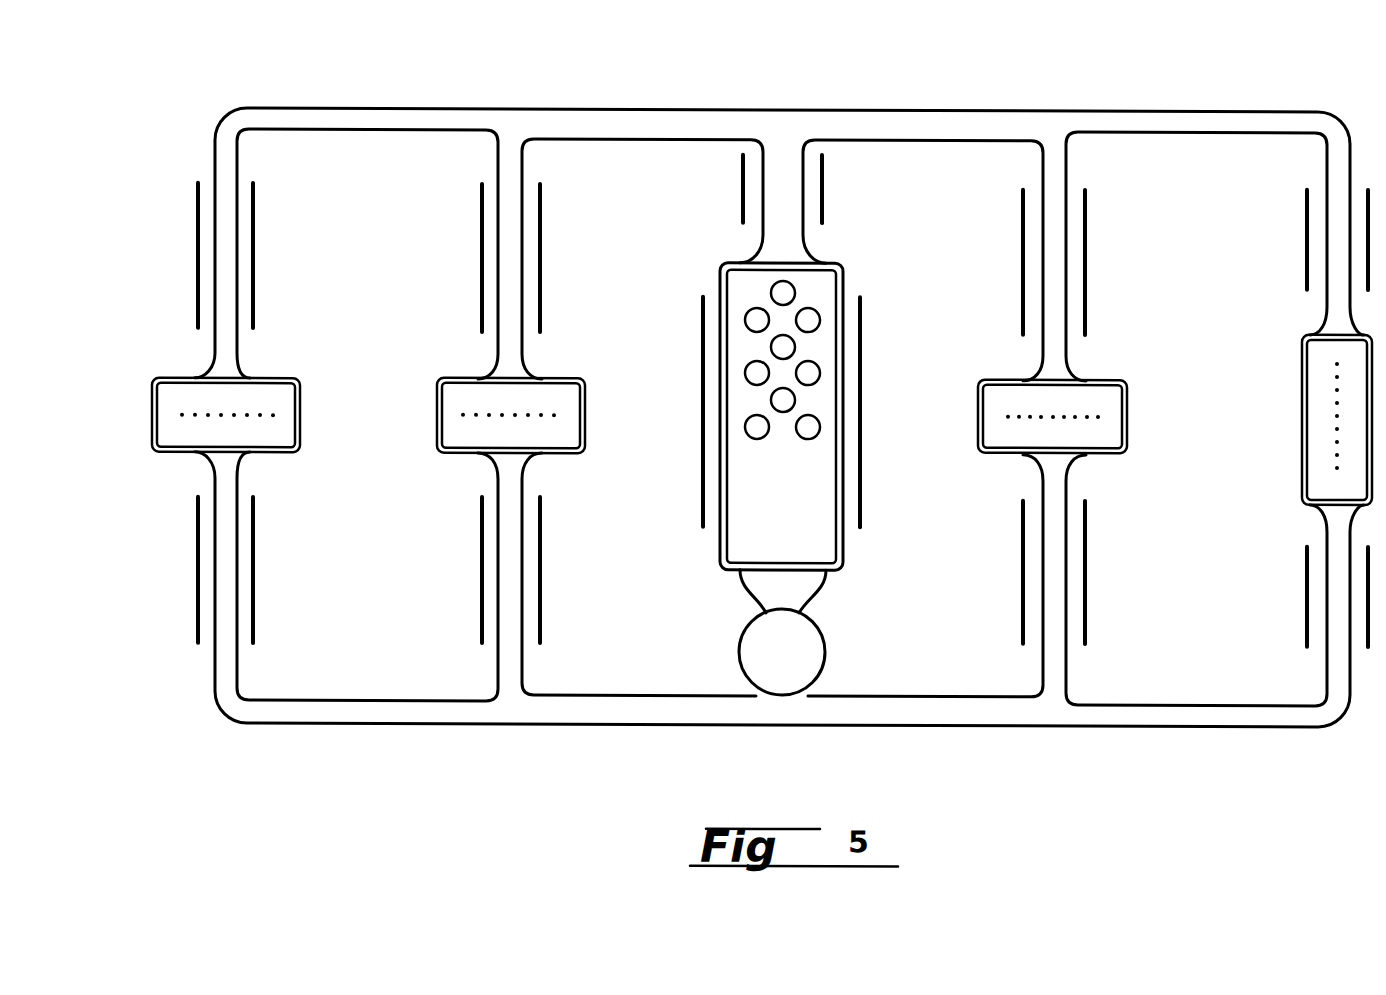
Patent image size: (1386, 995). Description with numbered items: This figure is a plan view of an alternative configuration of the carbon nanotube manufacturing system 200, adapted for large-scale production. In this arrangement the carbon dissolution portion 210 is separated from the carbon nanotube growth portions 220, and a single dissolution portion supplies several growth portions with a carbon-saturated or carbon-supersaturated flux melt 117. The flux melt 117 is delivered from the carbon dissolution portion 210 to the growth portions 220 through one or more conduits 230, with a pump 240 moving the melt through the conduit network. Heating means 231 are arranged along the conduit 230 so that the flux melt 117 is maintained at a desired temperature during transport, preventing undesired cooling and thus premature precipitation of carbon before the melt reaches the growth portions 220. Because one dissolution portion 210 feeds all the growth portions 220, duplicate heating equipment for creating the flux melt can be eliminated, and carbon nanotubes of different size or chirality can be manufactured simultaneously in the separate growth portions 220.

The system 200 is at (1230, 59).
The carbon dissolution portion 210 is at (848, 260).
The carbon nanotube growth portion 220 is at (447, 370).
The conduit 230 is at (848, 123).
The heating means 231 is at (1092, 279).
The pump 240 is at (760, 669).
The flux melt 117 is at (769, 517).